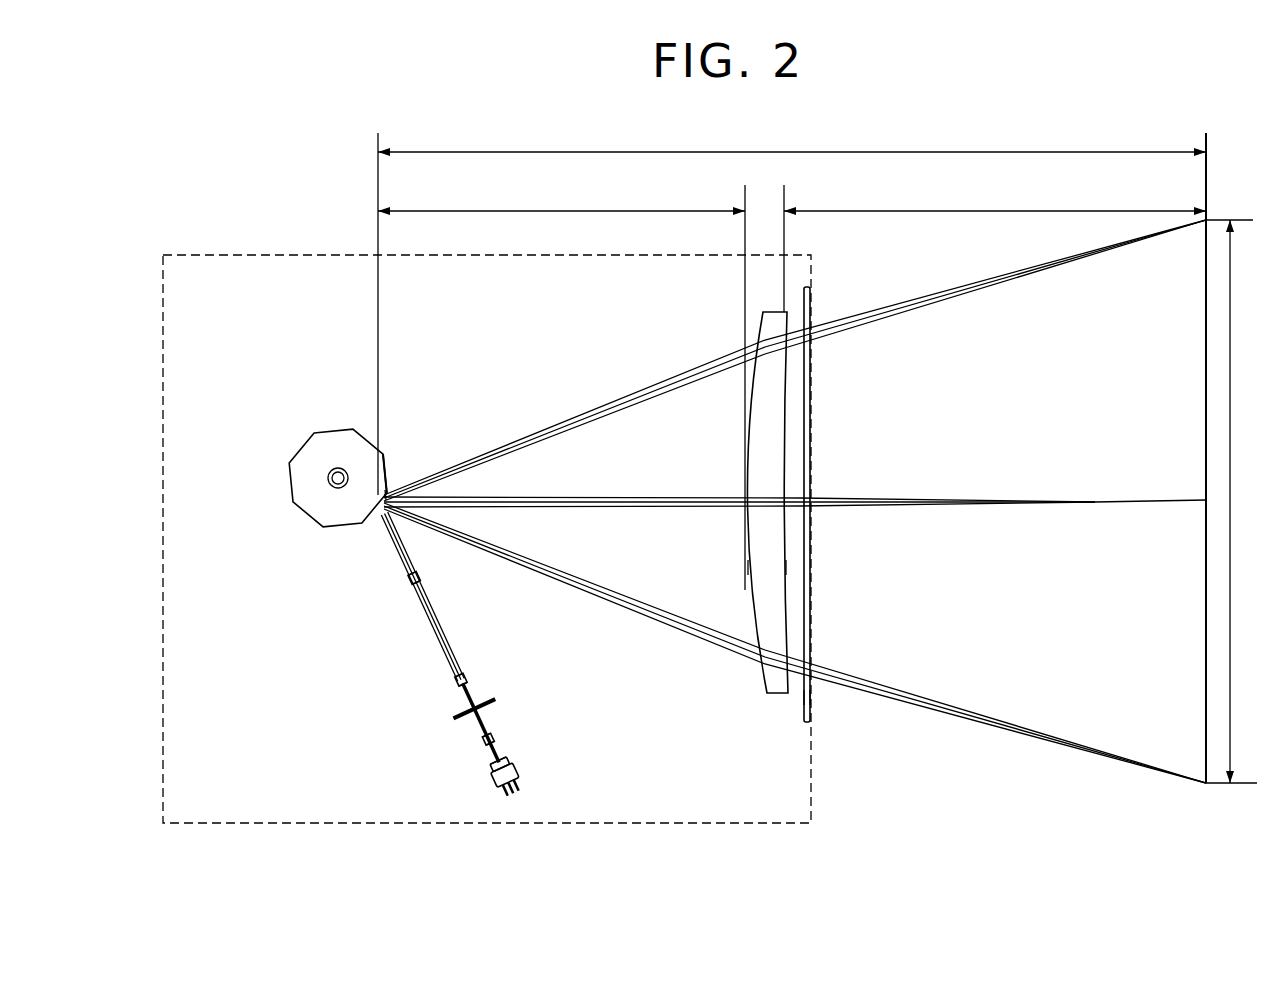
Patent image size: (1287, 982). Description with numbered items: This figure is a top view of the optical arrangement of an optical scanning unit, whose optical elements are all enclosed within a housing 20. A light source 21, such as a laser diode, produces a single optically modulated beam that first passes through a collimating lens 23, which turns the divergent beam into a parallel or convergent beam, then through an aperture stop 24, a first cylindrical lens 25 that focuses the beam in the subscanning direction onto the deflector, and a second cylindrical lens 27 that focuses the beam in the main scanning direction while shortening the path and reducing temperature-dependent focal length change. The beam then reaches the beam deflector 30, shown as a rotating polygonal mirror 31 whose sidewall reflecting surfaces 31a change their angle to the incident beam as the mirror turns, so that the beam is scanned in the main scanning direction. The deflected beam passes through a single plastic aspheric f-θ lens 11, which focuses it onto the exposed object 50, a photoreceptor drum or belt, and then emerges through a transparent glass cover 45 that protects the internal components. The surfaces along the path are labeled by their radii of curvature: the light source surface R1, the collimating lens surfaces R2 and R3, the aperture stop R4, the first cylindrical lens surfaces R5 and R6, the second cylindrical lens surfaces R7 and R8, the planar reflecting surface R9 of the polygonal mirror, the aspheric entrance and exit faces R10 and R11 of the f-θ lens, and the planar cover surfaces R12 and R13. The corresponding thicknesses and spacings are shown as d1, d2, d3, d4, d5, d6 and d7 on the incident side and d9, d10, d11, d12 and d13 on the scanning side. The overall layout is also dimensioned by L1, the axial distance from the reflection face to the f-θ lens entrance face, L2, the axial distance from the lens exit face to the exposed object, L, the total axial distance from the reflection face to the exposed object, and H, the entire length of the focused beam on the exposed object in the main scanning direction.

The housing 20 is at (813, 803).
The light source 21 is at (520, 770).
The collimating lens 23 is at (492, 736).
The aperture stop 24 is at (478, 700).
The first cylindrical lens 25 is at (470, 680).
The second cylindrical lens 27 is at (425, 582).
The beam deflector 30 is at (284, 477).
The rotating polygonal mirror 31 is at (300, 447).
The reflecting surface 31a is at (372, 522).
The f-theta scanning lens 11 is at (763, 679).
The cover 45 is at (806, 724).
The exposed object 50 is at (1205, 637).
The radius of curvature of light source surface R1 is at (485, 768).
The radius of curvature of collimating lens entrance surface R2 is at (482, 762).
The radius of curvature of collimating lens exit surface R3 is at (480, 745).
The radius of curvature of aperture stop R4 is at (453, 713).
The radius of curvature of first cylindrical lens entrance surface R5 is at (457, 690).
The radius of curvature of first cylindrical lens exit surface R6 is at (455, 678).
The radius of curvature of second cylindrical lens entrance surface R7 is at (408, 588).
The radius of curvature of second cylindrical lens exit surface R8 is at (408, 577).
The radius of curvature of reflecting surface R9 is at (386, 494).
The radius of curvature of f-θ lens entrance face R10 is at (748, 568).
The radius of curvature of f-θ lens exit face R11 is at (790, 566).
The radius of curvature of cover entrance surface R12 is at (803, 702).
The radius of curvature of cover exit surface R13 is at (812, 703).
The distance from light source d1 is at (505, 760).
The collimating lens thickness d2 is at (492, 745).
The distance from collimating lens to aperture stop d3 is at (490, 730).
The distance from aperture stop to first cylindrical lens d4 is at (475, 696).
The first cylindrical lens thickness d5 is at (465, 676).
The distance from first to second cylindrical lens d6 is at (442, 628).
The second cylindrical lens thickness d7 is at (422, 578).
The distance from reflecting surface to f-θ lens d9 is at (606, 496).
The f-θ lens thickness d10 is at (765, 496).
The distance from f-θ lens to cover d11 is at (800, 498).
The cover thickness d12 is at (812, 501).
The distance from cover to exposed object d13 is at (1030, 498).
The axial distance between reflection face and exposed object L is at (792, 306).
The axial distance between reflection face and f-θ lens entrance face L1 is at (561, 383).
The axial distance between f-θ lens exit face and exposed object L2 is at (995, 244).
The entire length in main scanning direction H is at (1231, 501).